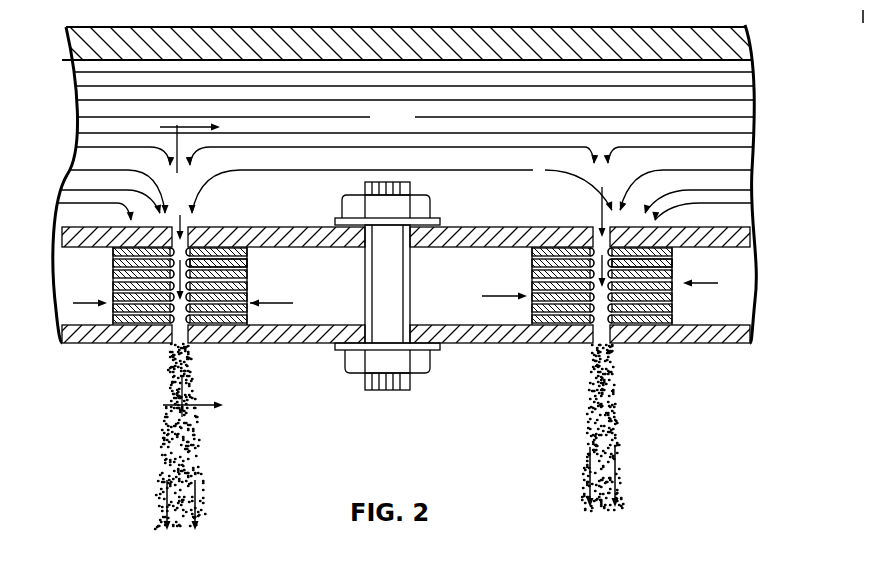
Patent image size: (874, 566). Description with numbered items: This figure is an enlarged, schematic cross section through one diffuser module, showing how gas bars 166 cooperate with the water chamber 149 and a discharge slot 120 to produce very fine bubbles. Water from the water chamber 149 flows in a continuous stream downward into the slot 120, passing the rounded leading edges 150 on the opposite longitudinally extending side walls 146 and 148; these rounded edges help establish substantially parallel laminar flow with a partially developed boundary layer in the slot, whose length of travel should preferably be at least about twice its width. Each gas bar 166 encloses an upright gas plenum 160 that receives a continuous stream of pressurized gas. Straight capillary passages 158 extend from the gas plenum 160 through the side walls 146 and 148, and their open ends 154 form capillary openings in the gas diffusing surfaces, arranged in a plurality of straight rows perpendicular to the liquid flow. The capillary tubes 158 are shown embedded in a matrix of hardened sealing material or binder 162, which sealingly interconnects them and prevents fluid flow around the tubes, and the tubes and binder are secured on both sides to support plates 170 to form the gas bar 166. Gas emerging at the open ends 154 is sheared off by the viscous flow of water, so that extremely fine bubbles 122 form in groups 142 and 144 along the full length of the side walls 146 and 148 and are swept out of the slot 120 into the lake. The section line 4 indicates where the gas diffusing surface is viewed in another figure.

The section line 4- 4 is at (206, 274).
The discharge slot 120 is at (200, 343).
The small bubbles 122 is at (190, 472).
The group of bubbles 142 is at (168, 302).
The group of bubbles 144 is at (198, 288).
The side wall 146 is at (114, 262).
The side wall 148 is at (213, 280).
The water chamber 149 is at (410, 118).
The rounded leading edge 150 is at (113, 262).
The open end of capillary passage 154 is at (641, 275).
The capillary passage 158 is at (247, 271).
The gas plenum 160 is at (452, 283).
The sealing material 162 is at (660, 320).
The gas bar 166 is at (458, 352).
The support plate 170 is at (78, 226).